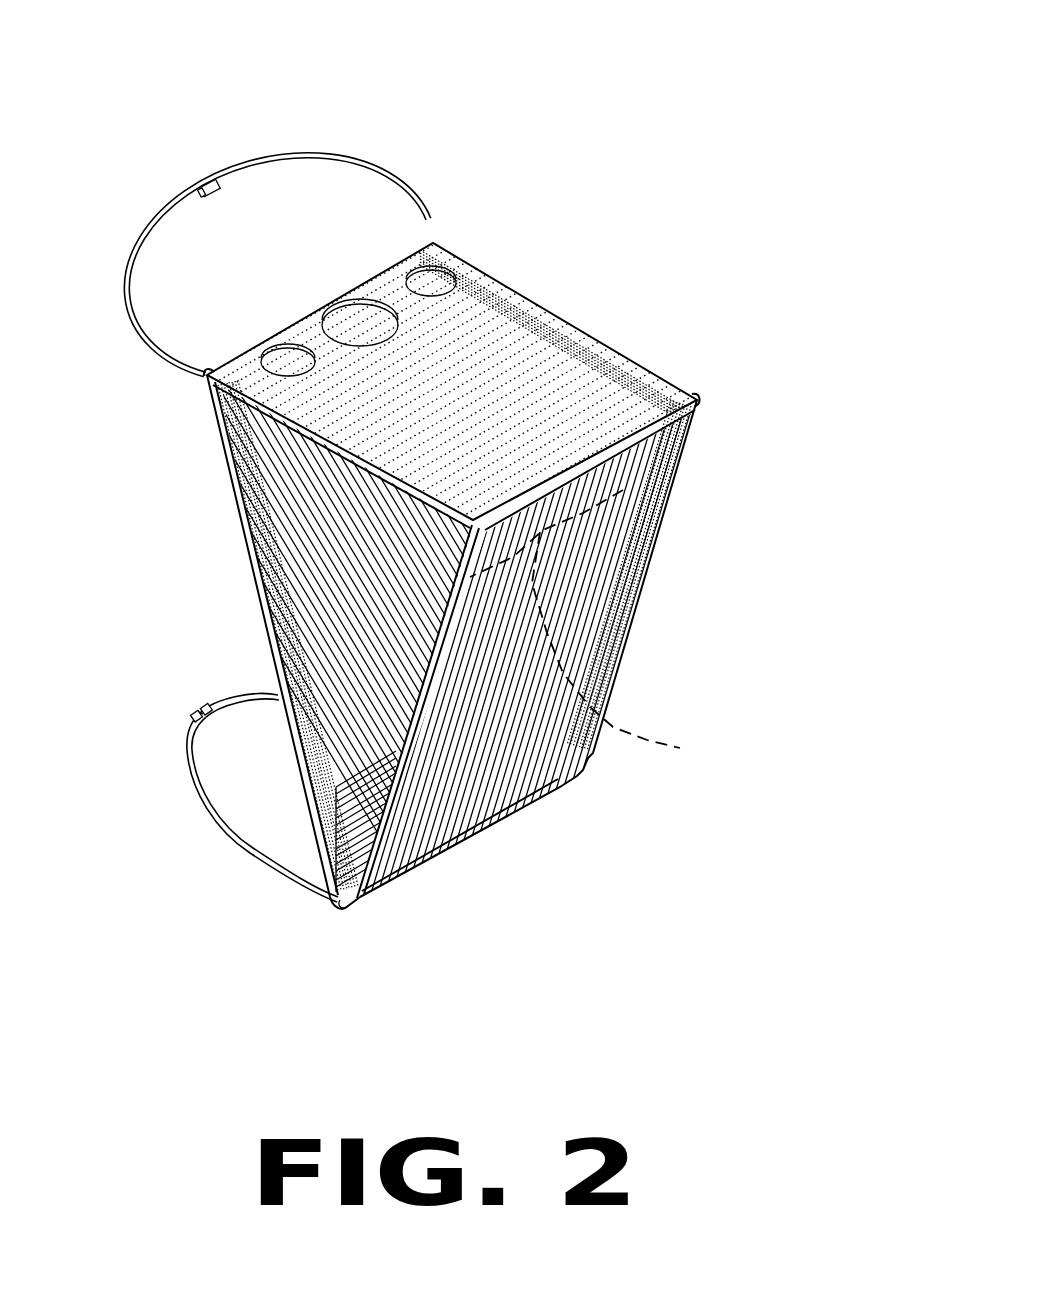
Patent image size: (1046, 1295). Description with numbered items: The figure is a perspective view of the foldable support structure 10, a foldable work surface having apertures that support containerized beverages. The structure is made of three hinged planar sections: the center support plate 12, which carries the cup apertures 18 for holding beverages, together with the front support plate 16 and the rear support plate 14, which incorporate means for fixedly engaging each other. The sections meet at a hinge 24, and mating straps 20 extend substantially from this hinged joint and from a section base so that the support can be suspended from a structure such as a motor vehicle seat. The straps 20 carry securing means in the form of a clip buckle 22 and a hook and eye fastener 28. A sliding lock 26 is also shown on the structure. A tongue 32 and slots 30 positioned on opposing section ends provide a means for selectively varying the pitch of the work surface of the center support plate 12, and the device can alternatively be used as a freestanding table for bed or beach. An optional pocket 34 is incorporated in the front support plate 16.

The foldable support structure 10 is at (660, 132).
The center support plate 12 is at (527, 305).
The rear support plate 14 is at (245, 538).
The front support plate 16 is at (565, 783).
The cup apertures 18 is at (440, 283).
The strap 20 is at (188, 782).
The buckle 22 is at (205, 178).
The hinge 24 is at (205, 380).
The sliding lock 26 is at (478, 522).
The hook and eye fastener 28 is at (198, 710).
The slot 30 is at (337, 897).
The tongue 32 is at (363, 900).
The pocket 34 is at (601, 640).